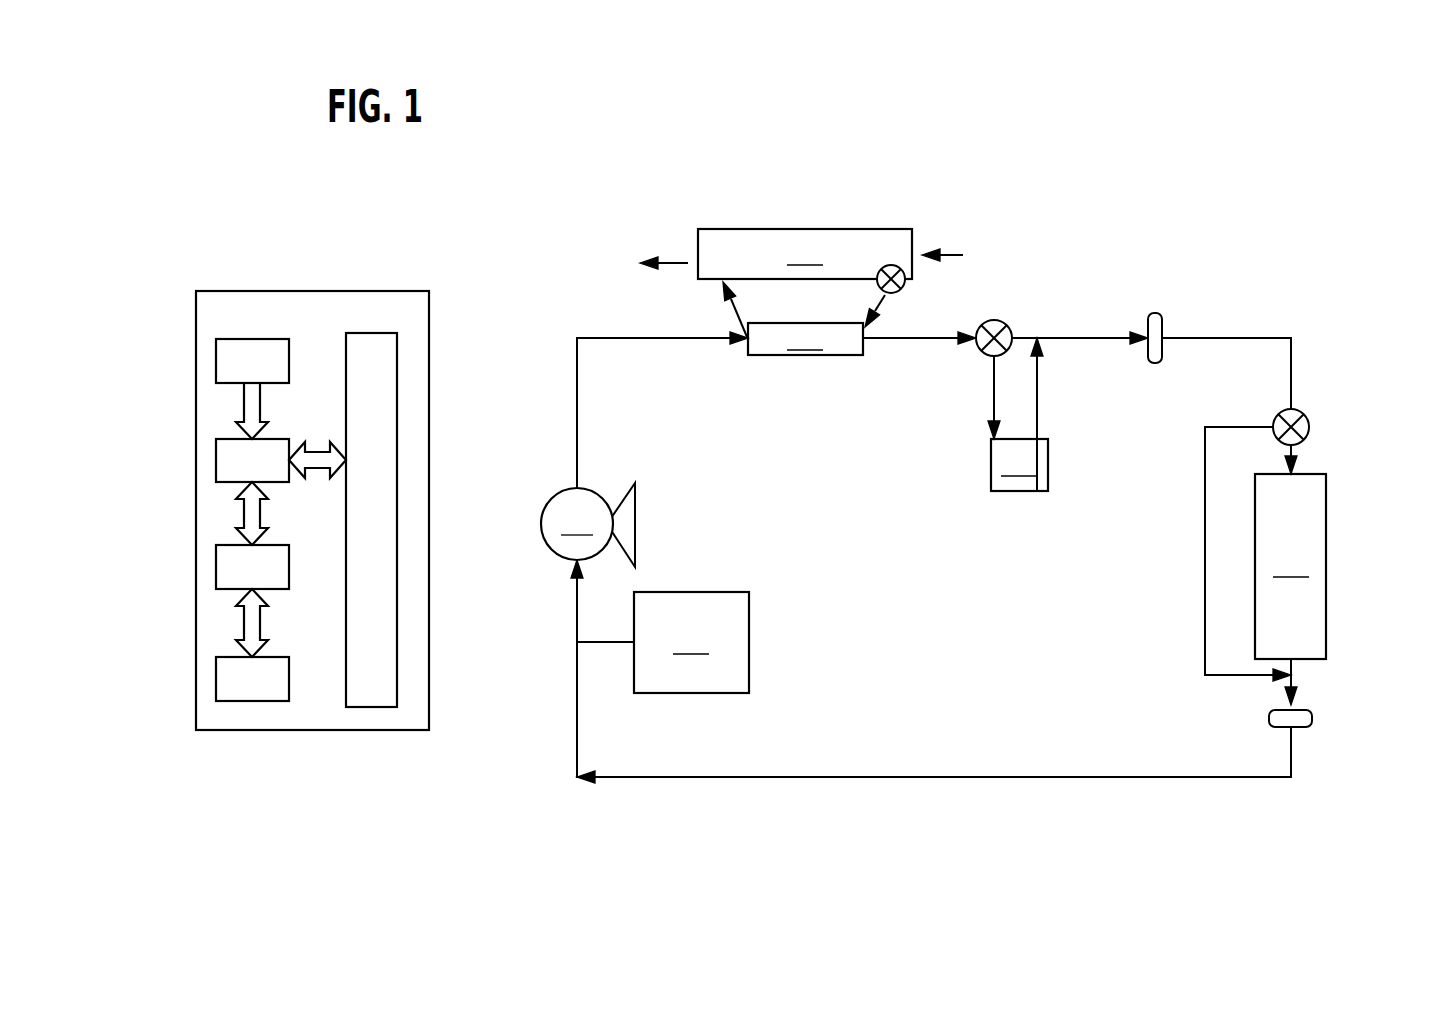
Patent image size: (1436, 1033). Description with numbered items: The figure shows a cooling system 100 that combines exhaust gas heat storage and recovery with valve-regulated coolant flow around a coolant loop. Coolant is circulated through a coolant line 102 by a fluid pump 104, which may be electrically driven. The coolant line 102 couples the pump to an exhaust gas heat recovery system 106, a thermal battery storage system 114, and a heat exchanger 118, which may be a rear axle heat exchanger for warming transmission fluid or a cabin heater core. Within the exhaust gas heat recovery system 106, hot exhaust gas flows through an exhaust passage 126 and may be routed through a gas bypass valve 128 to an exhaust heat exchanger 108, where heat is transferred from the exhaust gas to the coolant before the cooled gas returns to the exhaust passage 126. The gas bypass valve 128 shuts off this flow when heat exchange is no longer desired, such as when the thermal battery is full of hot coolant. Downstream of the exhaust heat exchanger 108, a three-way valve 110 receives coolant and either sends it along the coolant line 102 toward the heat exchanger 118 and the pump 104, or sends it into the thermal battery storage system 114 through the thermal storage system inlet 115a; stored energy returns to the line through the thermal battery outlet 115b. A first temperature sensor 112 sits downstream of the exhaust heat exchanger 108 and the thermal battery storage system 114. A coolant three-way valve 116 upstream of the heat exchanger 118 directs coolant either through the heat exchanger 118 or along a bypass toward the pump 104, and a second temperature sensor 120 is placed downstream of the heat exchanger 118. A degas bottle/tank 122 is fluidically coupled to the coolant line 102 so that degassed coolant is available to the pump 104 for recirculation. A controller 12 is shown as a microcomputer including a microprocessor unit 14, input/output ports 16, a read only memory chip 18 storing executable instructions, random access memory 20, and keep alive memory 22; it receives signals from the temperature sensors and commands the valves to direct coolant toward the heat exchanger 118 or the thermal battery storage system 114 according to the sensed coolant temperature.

The cooling system 100 is at (501, 201).
The controller 12 is at (429, 367).
The microprocessor unit 14 is at (216, 460).
The input/output ports 16 is at (373, 333).
The read only memory chip 18 is at (216, 360).
The random access memory 20 is at (216, 568).
The keep alive memory 22 is at (216, 680).
The coolant line 102 is at (577, 398).
The fluid pump 104 is at (588, 525).
The exhaust gas heat recovery system 106 is at (812, 257).
The exhaust heat exchanger 108 is at (805, 339).
The three-way valve 110 is at (997, 320).
The first temperature sensor 112 is at (1155, 313).
The thermal battery storage system 114 is at (1019, 465).
The thermal storage system inlet 115a is at (998, 390).
The thermal battery outlet 115b is at (1037, 425).
The coolant three-way valve 116 is at (1300, 417).
The heat exchanger 118 is at (1290, 566).
The second temperature sensor 120 is at (1305, 713).
The degas bottle/tank 122 is at (663, 642).
The exhaust passage 126 is at (805, 254).
The gas bypass valve 128 is at (897, 265).